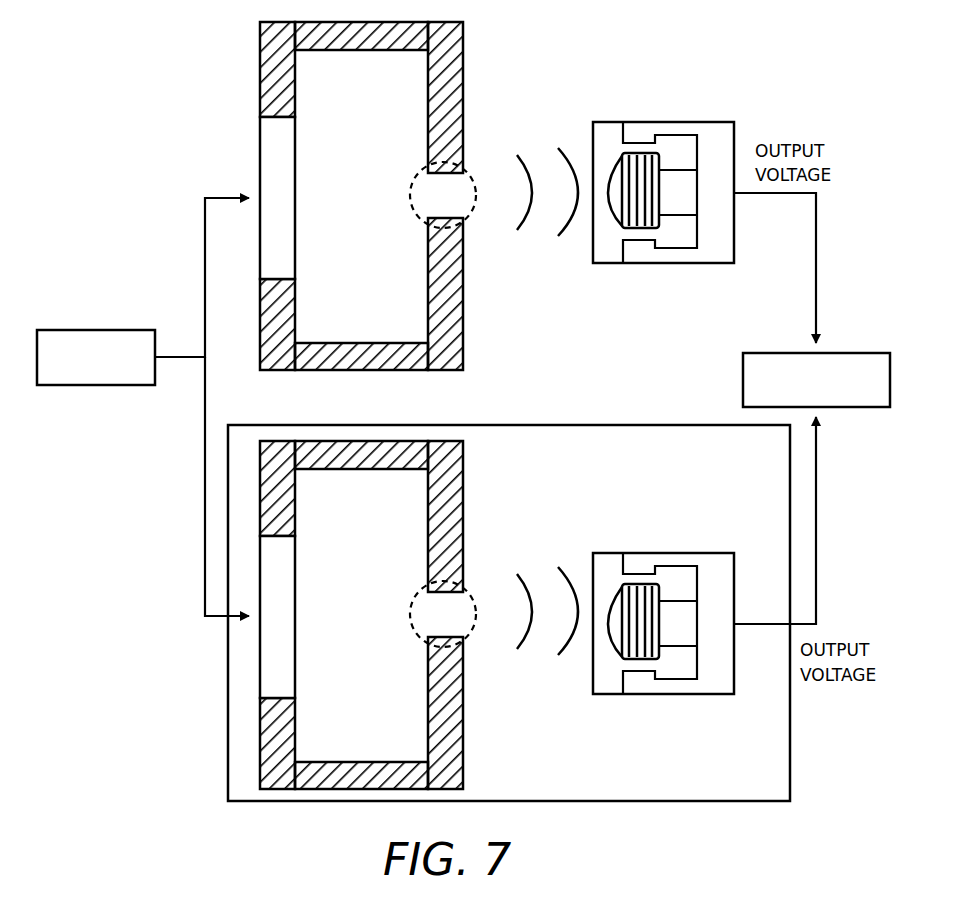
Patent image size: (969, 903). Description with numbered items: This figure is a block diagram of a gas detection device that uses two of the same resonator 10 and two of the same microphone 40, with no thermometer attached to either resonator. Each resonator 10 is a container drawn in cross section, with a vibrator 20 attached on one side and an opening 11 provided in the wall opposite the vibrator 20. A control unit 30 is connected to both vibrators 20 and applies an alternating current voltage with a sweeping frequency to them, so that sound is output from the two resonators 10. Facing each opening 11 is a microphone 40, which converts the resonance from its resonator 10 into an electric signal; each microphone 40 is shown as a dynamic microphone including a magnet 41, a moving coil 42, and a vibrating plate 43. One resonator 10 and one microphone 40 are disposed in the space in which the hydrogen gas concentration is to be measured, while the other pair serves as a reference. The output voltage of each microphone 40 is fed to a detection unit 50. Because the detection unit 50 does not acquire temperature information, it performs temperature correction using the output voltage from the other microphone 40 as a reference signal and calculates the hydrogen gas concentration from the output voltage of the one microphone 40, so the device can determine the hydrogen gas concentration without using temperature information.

The resonator 10 is at (465, 66).
The opening 11 is at (468, 219).
The vibrator 20 is at (296, 191).
The control unit 30 is at (66, 329).
The microphone 40 is at (735, 110).
The magnet 41 is at (673, 473).
The moving coil 42 is at (636, 471).
The vibrating plate 43 is at (603, 472).
The detection unit 50 is at (830, 352).